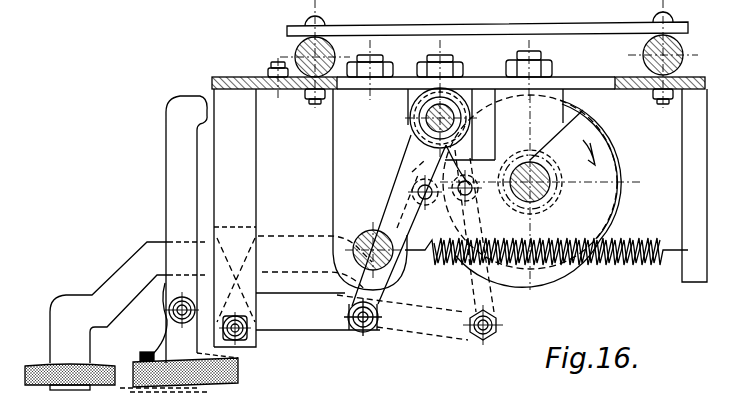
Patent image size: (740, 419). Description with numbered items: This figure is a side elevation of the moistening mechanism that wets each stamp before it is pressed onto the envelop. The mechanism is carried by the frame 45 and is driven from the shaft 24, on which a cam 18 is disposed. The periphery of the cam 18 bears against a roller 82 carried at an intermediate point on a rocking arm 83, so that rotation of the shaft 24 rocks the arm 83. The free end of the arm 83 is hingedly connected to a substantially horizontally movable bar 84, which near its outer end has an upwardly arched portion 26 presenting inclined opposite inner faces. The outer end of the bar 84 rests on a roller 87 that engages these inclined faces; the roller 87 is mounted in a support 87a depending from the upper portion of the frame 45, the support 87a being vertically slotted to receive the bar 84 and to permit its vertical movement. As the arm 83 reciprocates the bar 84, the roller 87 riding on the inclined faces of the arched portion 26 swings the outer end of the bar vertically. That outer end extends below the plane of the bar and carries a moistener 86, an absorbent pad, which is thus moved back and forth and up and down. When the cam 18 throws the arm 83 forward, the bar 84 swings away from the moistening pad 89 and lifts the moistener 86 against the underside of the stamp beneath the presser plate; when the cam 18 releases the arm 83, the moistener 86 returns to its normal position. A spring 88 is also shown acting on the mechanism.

The frame 45 is at (258, 76).
The rocking arm 83 is at (420, 165).
The roller 82 is at (416, 190).
The shaft 24 is at (547, 180).
The cam 18 is at (604, 207).
The spring 88 is at (622, 264).
The bar 84 is at (318, 311).
The support 87a is at (230, 262).
The roller 87 is at (258, 339).
The arched portion 26 is at (106, 286).
The moistener 86 is at (63, 369).
The moistening pad 89 is at (238, 372).